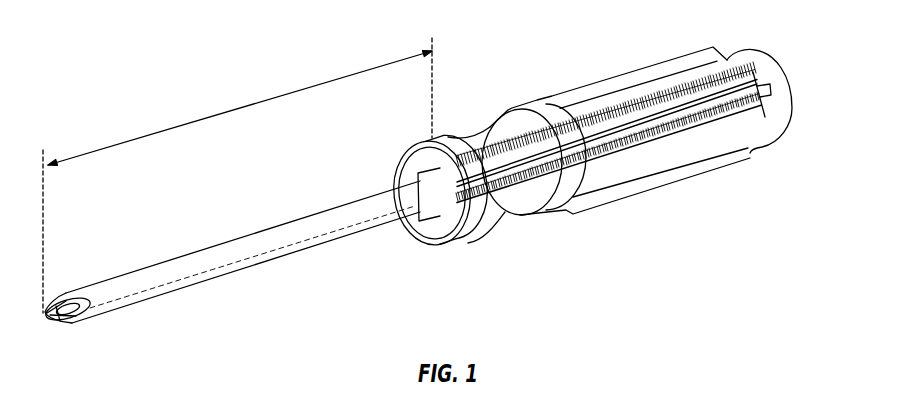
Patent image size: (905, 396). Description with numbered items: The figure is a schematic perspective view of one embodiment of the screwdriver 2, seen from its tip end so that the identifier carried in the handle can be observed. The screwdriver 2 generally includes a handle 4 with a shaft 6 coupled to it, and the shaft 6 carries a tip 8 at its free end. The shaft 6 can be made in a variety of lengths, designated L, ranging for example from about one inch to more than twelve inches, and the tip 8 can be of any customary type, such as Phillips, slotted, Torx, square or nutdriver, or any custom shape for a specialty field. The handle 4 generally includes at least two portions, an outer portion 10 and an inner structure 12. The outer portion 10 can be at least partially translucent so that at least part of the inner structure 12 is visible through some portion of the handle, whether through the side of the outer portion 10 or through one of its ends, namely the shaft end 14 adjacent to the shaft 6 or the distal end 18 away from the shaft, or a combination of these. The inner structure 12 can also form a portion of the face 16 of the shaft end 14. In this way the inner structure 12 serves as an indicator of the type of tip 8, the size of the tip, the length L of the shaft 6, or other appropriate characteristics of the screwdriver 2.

The screwdriver 2 is at (468, 90).
The handle 4 is at (628, 138).
The shaft 6 is at (225, 275).
The tip 8 is at (72, 317).
The outer portion 10 is at (628, 192).
The inner structure 12 is at (507, 188).
The shaft end 14 is at (445, 227).
The face 16 is at (427, 220).
The distal end 18 is at (762, 55).
The length L is at (237, 175).